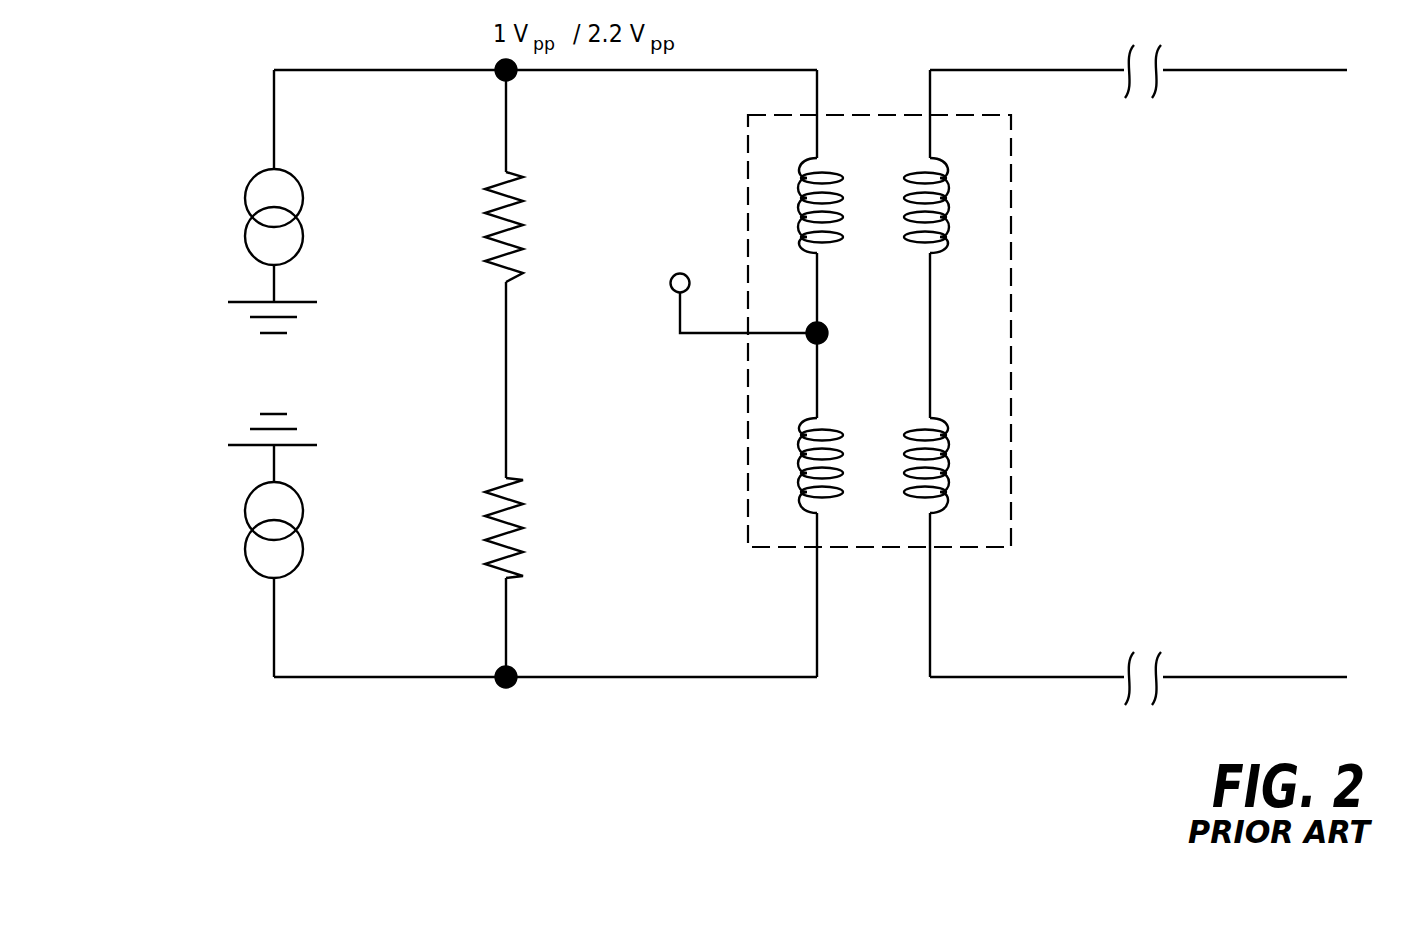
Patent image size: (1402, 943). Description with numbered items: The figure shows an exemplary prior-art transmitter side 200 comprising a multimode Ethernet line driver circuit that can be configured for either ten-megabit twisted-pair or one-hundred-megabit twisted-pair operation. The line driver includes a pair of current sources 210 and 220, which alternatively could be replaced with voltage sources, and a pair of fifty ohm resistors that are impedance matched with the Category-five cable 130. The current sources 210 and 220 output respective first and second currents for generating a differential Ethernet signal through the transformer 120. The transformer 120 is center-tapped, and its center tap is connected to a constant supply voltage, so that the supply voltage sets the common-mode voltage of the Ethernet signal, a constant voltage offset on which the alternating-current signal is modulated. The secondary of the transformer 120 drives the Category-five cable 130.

The transformer 120 is at (892, 559).
The Category-5 cable 130 is at (1248, 348).
The transmitter side 200 is at (494, 699).
The current source 210 is at (200, 208).
The current source 220 is at (222, 521).